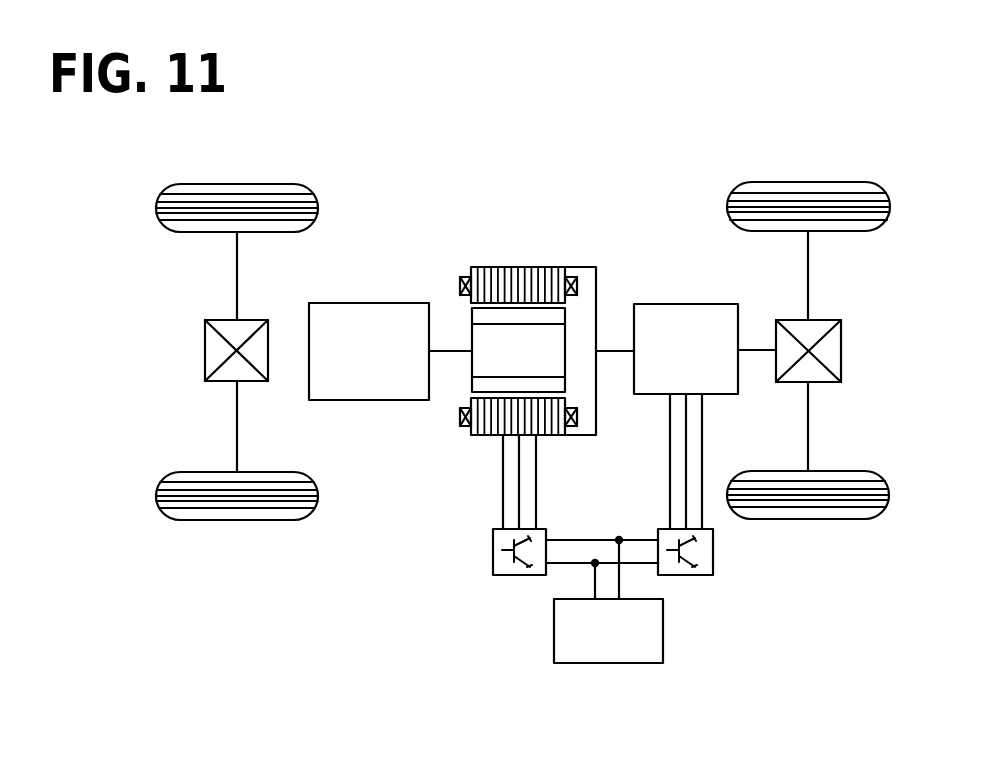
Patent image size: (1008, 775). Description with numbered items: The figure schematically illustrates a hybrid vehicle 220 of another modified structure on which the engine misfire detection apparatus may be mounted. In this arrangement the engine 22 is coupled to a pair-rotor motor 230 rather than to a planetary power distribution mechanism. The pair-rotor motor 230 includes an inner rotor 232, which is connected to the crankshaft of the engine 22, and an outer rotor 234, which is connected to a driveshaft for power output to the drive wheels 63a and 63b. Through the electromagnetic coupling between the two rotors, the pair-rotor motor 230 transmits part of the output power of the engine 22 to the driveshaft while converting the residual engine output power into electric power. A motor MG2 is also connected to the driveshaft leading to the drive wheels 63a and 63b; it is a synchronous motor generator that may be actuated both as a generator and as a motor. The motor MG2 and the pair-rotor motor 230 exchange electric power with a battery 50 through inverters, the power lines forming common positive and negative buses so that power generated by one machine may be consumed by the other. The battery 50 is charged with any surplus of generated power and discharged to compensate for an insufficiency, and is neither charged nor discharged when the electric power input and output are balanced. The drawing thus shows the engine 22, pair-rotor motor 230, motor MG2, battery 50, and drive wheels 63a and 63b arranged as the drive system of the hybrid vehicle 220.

The engine 22 is at (368, 400).
The hybrid vehicle 220 is at (627, 186).
The pair-rotor motor 230 is at (458, 195).
The inner rotor 232 is at (471, 337).
The outer rotor 234 is at (519, 267).
The motor MG2 is at (686, 304).
The battery 50 is at (663, 625).
The drive wheel 63a is at (808, 182).
The drive wheel 63b is at (808, 519).